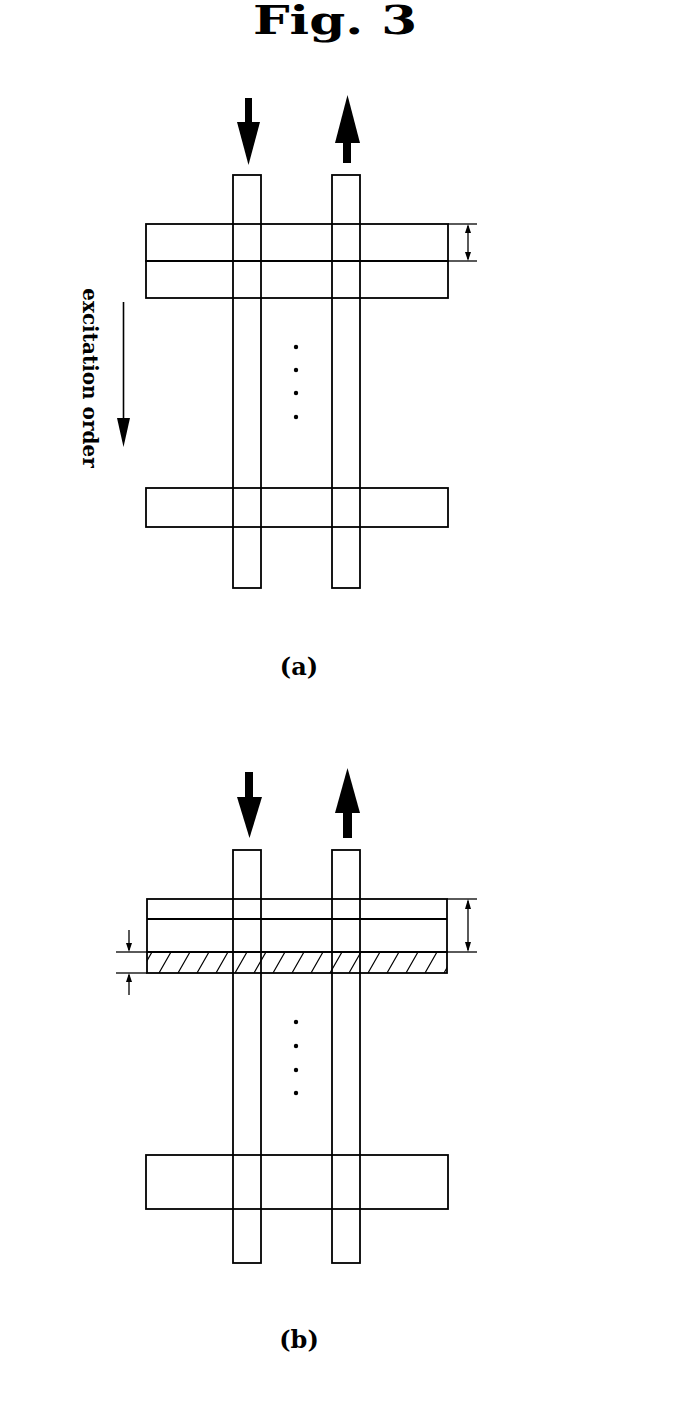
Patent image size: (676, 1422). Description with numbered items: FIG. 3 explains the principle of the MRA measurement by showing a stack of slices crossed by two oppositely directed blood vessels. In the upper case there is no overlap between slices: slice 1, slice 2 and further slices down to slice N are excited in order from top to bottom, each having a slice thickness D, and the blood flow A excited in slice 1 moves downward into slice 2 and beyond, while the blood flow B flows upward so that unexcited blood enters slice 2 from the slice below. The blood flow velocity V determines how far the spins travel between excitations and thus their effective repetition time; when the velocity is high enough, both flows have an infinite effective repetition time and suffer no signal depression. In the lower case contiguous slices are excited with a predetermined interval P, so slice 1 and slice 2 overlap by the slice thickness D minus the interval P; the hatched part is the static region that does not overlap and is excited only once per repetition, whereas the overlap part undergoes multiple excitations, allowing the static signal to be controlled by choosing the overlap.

The blood flow A is at (230, 719).
The blood flow B is at (332, 719).
The blood flow velocity V is at (298, 458).
The slice 1 is at (399, 224).
The slice 2 is at (446, 285).
The slice N is at (449, 508).
The slice thickness D is at (478, 588).
The predetermined interval P is at (118, 962).